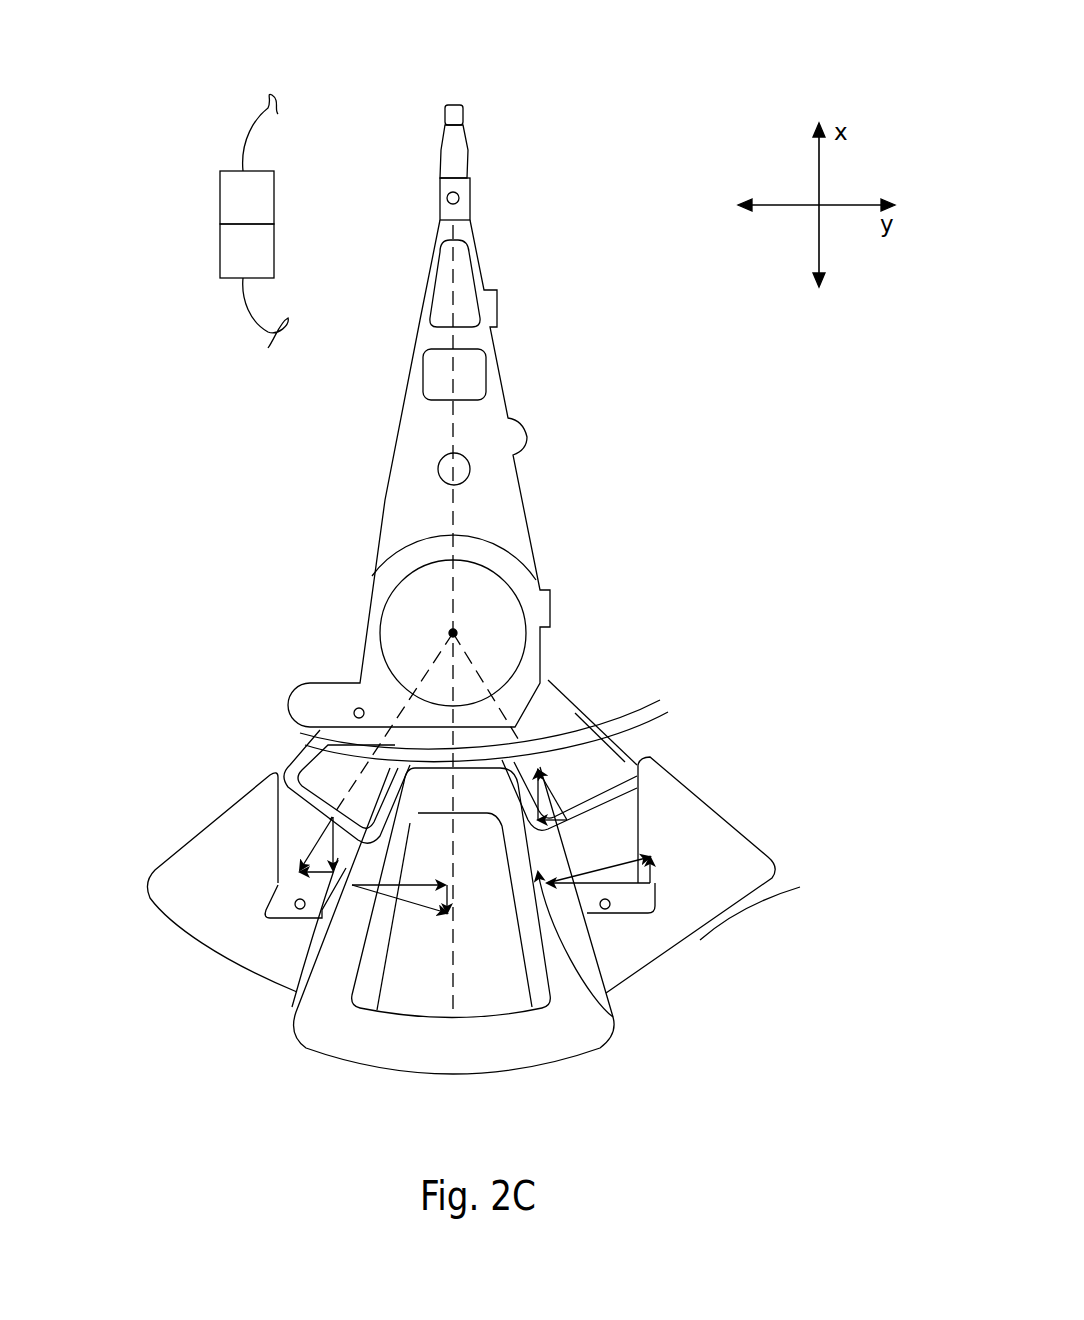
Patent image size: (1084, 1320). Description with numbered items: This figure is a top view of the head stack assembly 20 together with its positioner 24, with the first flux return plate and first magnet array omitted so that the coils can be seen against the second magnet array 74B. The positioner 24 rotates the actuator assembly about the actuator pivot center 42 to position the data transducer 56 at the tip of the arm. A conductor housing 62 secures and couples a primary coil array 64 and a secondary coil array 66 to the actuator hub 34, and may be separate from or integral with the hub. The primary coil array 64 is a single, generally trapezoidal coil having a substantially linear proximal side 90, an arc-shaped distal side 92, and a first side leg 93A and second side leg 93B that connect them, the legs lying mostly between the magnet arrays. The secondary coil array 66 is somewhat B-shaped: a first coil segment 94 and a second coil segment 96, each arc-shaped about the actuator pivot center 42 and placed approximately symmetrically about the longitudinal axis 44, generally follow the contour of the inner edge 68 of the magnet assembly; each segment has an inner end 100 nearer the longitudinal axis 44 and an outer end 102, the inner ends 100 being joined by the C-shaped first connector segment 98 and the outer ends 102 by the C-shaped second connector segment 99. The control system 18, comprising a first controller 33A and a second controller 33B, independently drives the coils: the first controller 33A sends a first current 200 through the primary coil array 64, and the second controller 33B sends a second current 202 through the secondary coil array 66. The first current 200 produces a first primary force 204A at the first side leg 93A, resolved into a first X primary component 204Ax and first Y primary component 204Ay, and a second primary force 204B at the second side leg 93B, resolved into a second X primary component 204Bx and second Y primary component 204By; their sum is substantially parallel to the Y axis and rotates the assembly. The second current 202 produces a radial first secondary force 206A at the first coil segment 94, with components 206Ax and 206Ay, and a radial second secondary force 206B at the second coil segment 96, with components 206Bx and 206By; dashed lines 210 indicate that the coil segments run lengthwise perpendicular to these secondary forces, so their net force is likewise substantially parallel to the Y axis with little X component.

The control system 18 is at (135, 180).
The first controller 33A is at (230, 195).
The second controller 33B is at (230, 253).
The head stack assembly 20 is at (565, 290).
The data transducer 56 is at (454, 104).
The actuator pivot center 42 is at (451, 631).
The longitudinal axis 44 is at (455, 578).
The dashed lines 210 is at (477, 667).
The second current 202 is at (389, 820).
The actuator hub 34 is at (533, 667).
The second connector segment 99 is at (560, 740).
The first connector segment 98 is at (603, 742).
The positioner 24 is at (274, 736).
The secondary coil array 66 is at (296, 737).
The outer end 102 is at (288, 772).
The first coil segment 94 is at (292, 790).
The conductor housing 62 is at (288, 822).
The first X secondary component 206Ax is at (333, 827).
The first secondary force 206A is at (316, 845).
The first Y secondary component 206Ay is at (300, 880).
The second X secondary component 206Bx is at (548, 772).
The second secondary force 206B is at (565, 802).
The second Y secondary component 206By is at (575, 823).
The second coil segment 96 is at (590, 842).
The inner end 100 is at (330, 928).
The second magnet array 74B is at (755, 852).
The second X primary component 204Bx is at (655, 860).
The second primary force 204B is at (656, 872).
The second Y primary component 204By is at (652, 887).
The second side leg 93B is at (598, 950).
The first side leg 93A is at (330, 955).
The primary coil array 64 is at (325, 1010).
The first current 200 is at (612, 1014).
The inner edge 68 is at (530, 1060).
The first primary force 204A is at (352, 886).
The first Y primary component 204Ay is at (420, 886).
The first X primary component 204Ax is at (447, 913).
The proximal side 90 is at (464, 795).
The distal side 92 is at (520, 1060).